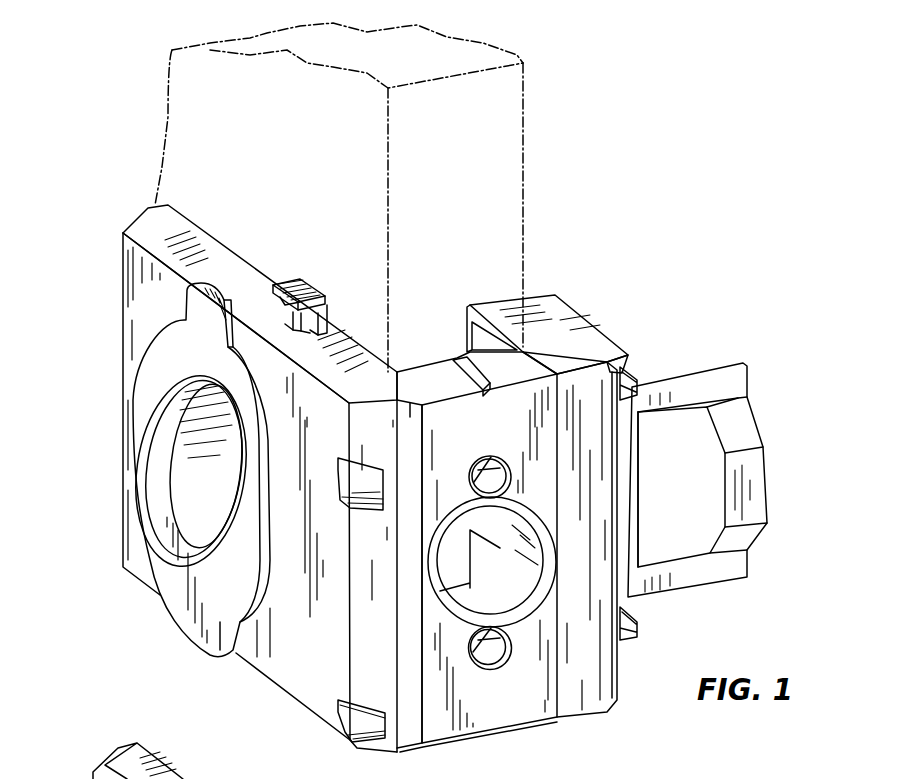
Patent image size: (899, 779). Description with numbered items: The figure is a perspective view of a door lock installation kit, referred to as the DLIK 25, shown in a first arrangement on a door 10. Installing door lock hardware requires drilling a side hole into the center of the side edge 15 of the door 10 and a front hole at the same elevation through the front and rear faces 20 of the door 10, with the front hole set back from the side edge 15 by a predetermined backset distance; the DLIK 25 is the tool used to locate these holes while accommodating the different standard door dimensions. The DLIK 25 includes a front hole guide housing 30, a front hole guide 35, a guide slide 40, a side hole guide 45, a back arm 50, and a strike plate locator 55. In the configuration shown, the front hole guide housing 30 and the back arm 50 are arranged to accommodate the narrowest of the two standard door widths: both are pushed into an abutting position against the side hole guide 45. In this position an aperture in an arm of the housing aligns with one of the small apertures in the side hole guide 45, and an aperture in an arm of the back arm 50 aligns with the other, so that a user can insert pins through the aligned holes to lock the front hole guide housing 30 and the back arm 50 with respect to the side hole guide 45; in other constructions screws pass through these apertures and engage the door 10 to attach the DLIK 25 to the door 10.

The door 10 is at (568, 71).
The side edge 15 is at (500, 143).
The front and rear faces 20 is at (525, 207).
The DLIK 25 is at (707, 264).
The front hole guide housing 30 is at (290, 660).
The front hole guide 35 is at (205, 483).
The guide slide 40 is at (327, 317).
The side hole guide 45 is at (517, 710).
The back arm 50 is at (585, 325).
The strike plate locator 55 is at (717, 382).